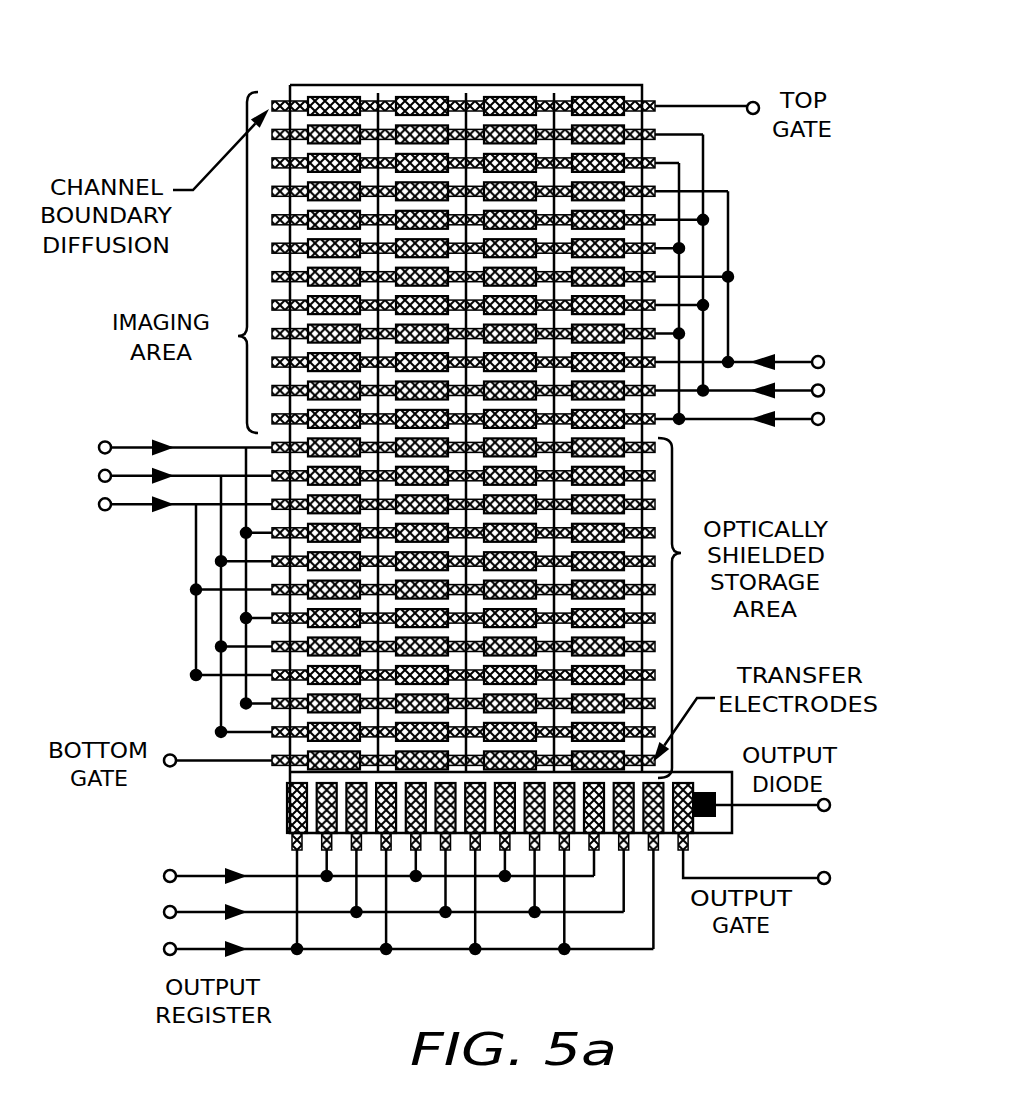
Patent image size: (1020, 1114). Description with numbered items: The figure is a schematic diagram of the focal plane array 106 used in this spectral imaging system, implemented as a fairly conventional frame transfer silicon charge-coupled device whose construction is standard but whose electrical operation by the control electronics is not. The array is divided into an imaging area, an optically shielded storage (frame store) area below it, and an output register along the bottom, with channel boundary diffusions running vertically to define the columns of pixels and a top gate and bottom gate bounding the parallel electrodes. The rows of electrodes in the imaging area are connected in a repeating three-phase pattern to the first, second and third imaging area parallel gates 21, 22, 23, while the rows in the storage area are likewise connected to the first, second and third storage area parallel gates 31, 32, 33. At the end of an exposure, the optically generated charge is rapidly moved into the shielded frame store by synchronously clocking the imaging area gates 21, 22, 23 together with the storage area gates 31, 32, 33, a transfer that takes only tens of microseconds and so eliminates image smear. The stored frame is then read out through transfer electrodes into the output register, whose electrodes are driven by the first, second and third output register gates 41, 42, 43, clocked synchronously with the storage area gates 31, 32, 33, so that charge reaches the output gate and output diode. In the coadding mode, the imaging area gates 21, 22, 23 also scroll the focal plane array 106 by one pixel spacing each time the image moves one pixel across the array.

The focal plane array 106 is at (165, 130).
The parallel gate P21 21 is at (769, 283).
The parallel gate P22 22 is at (769, 275).
The parallel gate P23 23 is at (769, 311).
The parallel gate P31 31 is at (160, 560).
The parallel gate P32 32 is at (160, 594).
The parallel gate P33 33 is at (160, 585).
The CCD gate P41 41 is at (351, 869).
The CCD gate P42 42 is at (366, 888).
The CCD gate P43 43 is at (380, 907).